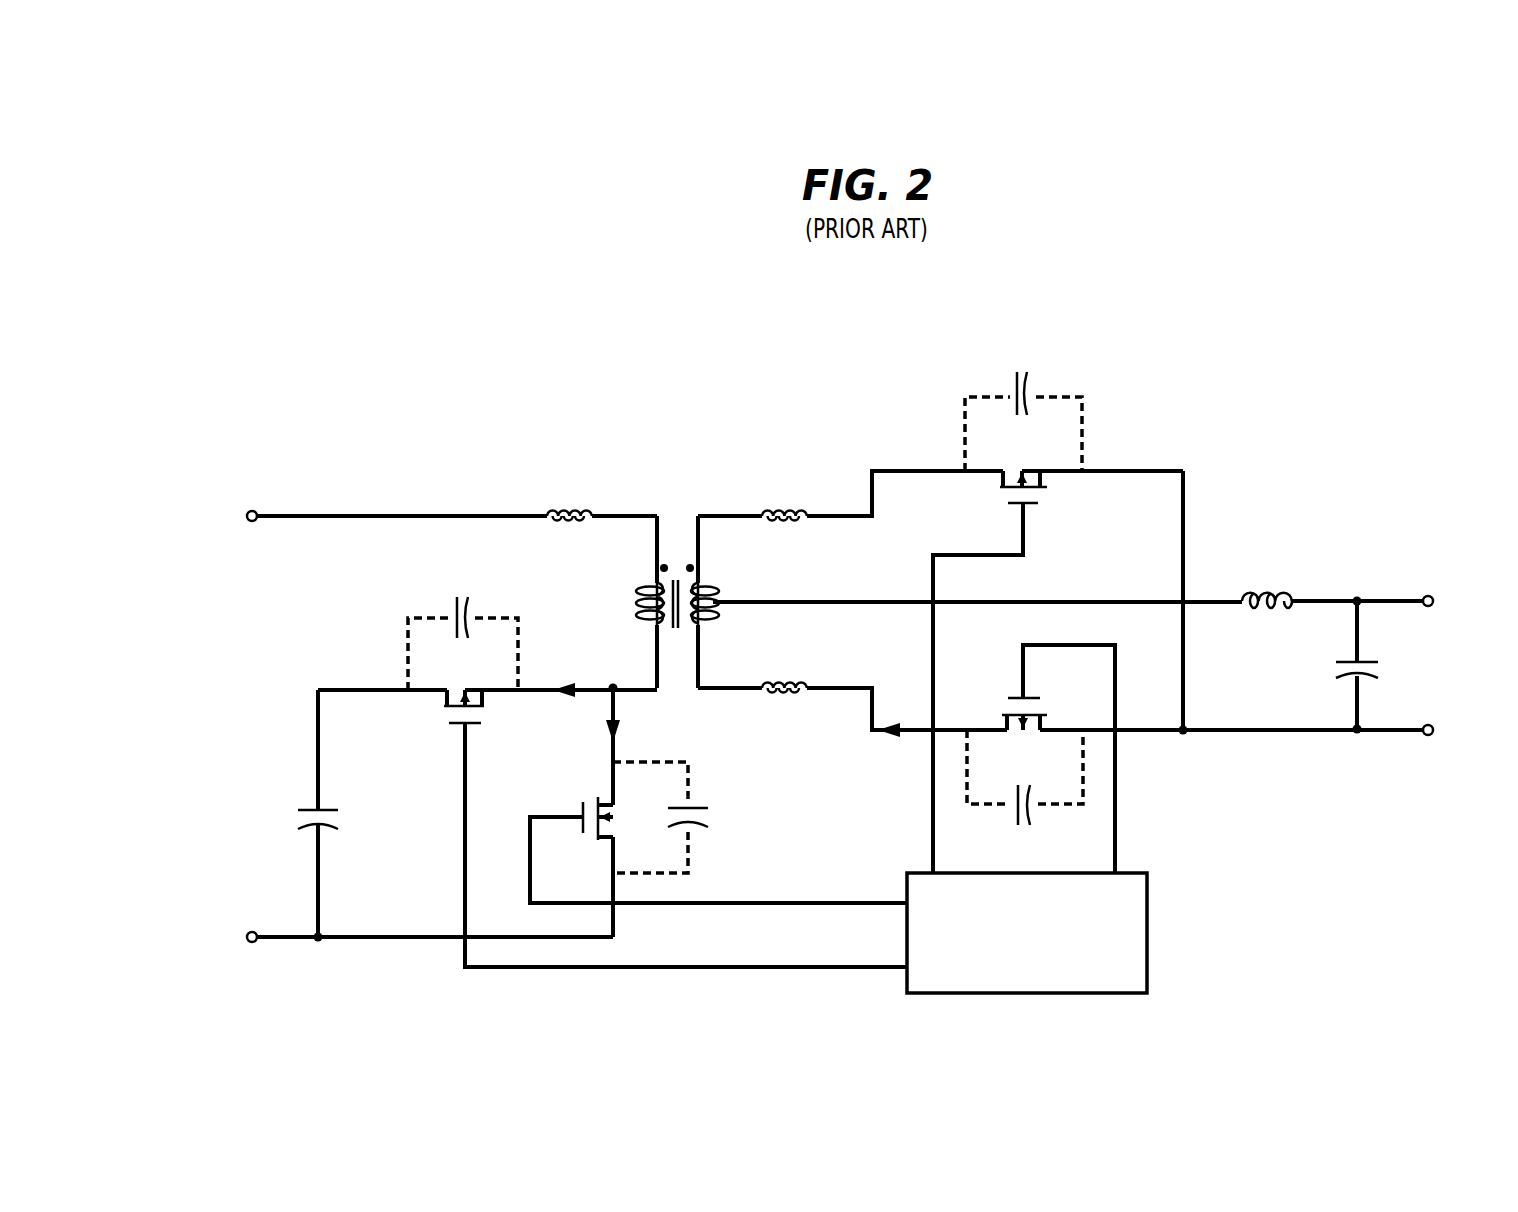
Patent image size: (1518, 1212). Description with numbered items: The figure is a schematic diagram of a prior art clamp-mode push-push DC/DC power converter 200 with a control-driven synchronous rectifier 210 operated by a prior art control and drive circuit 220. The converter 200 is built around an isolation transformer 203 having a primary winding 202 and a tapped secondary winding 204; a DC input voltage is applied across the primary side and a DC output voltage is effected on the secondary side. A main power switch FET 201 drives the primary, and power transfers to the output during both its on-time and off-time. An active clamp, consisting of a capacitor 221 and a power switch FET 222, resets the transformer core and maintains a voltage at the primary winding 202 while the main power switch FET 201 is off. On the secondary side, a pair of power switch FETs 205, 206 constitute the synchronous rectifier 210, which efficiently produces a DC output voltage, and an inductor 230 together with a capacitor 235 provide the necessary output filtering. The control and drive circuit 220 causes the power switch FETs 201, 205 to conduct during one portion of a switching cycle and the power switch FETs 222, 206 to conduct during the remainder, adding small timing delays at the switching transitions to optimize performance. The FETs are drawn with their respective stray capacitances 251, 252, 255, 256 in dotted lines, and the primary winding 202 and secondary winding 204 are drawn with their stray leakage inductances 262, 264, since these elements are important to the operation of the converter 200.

The clamp-mode push-push DC/DC power converter 200 is at (693, 352).
The main power switch FET 201 is at (578, 808).
The primary winding 202 is at (640, 601).
The isolation transformer 203 is at (674, 581).
The tapped secondary winding 204 is at (710, 594).
The power switch FET 205 is at (1012, 712).
The power switch FET 206 is at (1032, 505).
The control-driven synchronous rectifier 210 is at (1208, 494).
The control and drive circuit 220 is at (1150, 920).
The capacitor 221 is at (300, 818).
The power switch FET 222 is at (447, 716).
The inductor 230 is at (1270, 607).
The capacitor 235 is at (1347, 673).
The stray capacitance 251 is at (700, 810).
The stray capacitance 252 is at (448, 608).
The stray capacitance 255 is at (1010, 812).
The stray capacitance 256 is at (1012, 380).
The stray leakage inductance 262 is at (572, 500).
The stray leakage inductance 264 is at (780, 500).